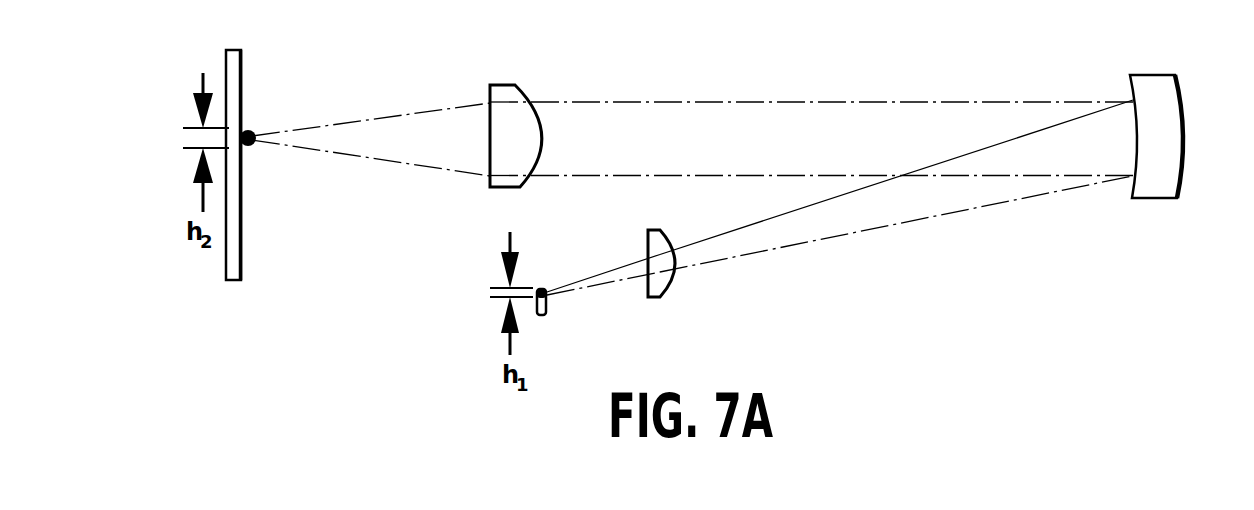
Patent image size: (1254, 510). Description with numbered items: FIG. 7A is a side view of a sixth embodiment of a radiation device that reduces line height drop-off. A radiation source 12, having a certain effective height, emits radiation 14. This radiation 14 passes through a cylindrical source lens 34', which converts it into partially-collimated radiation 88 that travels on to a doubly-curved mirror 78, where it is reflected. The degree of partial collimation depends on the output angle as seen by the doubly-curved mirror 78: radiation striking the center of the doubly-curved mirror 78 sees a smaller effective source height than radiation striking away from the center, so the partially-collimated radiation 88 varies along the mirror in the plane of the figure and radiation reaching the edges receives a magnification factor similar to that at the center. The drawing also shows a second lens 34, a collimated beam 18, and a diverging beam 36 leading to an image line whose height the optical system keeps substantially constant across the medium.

The radiation source 12 is at (541, 288).
The radiation 14 is at (609, 290).
The collimated beam 18 is at (727, 90).
The collimating lens 34 is at (531, 115).
The cylindrical source lens 34' is at (686, 246).
The diverging beam 36 is at (413, 98).
The doubly-curved mirror 78 is at (1172, 97).
The partially-collimated radiation 88 is at (840, 248).